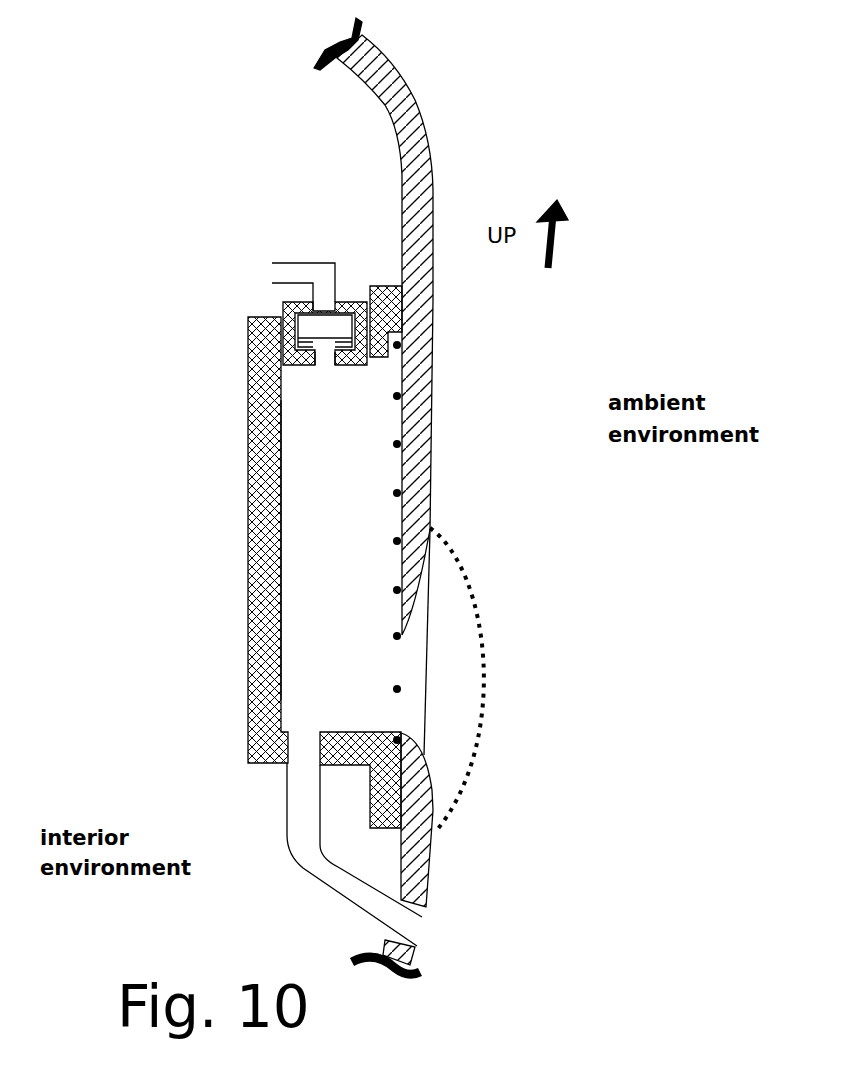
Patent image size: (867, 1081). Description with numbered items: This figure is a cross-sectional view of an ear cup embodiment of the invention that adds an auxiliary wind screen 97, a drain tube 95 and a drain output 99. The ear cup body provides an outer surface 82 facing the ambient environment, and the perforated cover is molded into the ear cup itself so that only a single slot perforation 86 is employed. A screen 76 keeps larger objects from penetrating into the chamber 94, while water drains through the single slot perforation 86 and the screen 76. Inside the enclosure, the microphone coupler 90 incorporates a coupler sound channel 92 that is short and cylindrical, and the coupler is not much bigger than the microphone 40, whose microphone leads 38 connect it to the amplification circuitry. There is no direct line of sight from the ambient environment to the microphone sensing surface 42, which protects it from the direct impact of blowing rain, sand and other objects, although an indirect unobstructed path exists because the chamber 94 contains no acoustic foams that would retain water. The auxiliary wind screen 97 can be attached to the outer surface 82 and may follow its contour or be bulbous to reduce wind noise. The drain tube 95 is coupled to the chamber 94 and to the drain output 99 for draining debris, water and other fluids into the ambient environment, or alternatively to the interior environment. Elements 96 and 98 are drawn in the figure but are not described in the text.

The microphone leads 38 is at (255, 267).
The microphone 40 is at (297, 333).
The microphone sensing surface 42 is at (340, 336).
The screen 76 is at (397, 688).
The outer surface 82 is at (433, 176).
The single slot perforation 86 is at (417, 678).
The microphone coupler 90 is at (285, 304).
The coupler sound channel 92 is at (330, 361).
The chamber 94 is at (310, 495).
The drain tube 95 is at (303, 870).
The wall 96 is at (248, 613).
The auxiliary wind screen 97 is at (483, 622).
The inner surface 98 is at (282, 582).
The drain output 99 is at (428, 932).